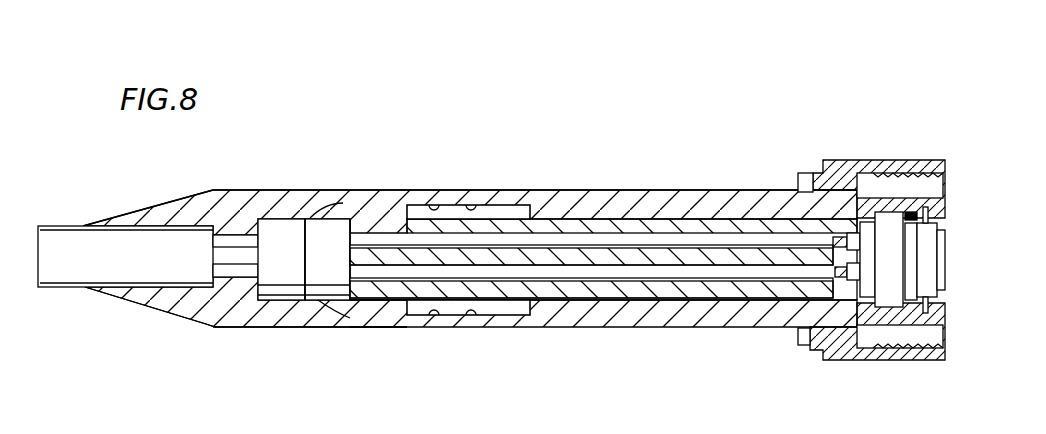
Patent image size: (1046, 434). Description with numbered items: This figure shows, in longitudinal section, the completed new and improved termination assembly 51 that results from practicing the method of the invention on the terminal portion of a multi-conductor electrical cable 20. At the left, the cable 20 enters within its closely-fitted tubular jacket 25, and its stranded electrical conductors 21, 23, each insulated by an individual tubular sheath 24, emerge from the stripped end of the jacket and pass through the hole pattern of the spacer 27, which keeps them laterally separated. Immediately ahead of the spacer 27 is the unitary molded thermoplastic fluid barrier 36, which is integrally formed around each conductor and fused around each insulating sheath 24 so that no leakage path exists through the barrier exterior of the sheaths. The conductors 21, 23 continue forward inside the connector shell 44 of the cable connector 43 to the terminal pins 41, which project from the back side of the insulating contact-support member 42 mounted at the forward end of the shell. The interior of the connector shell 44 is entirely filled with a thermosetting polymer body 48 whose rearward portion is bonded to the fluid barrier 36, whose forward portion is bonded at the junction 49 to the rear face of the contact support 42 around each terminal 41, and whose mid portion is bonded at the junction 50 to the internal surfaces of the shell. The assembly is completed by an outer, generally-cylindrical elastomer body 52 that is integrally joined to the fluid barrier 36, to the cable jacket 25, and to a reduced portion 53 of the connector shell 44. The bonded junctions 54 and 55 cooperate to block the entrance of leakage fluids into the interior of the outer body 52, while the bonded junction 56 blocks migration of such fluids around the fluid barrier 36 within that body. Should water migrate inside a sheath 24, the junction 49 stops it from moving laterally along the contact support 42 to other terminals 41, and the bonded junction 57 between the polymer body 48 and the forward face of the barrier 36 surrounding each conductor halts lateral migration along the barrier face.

The multi-conductor electrical cable 20 is at (67, 296).
The electrical conductor 21 is at (583, 279).
The electrical conductor 23 is at (720, 246).
The insulating sheath 24 is at (812, 336).
The cable jacket 25 is at (170, 263).
The spacer 27 is at (290, 263).
The fluid barrier 36 is at (341, 263).
The terminal pin 41 is at (852, 278).
The contact-support member 42 is at (890, 230).
The cable connector 43 is at (661, 186).
The connector shell 44 is at (654, 320).
The polymer body 48 is at (385, 302).
The bonded junction 49 is at (859, 222).
The bonded junction 50 is at (705, 301).
The termination assembly 51 is at (544, 185).
The outer elastomer body 52 is at (253, 318).
The reduced portion of connector shell 53 is at (498, 316).
The bonded junction 54 is at (172, 290).
The bonded junction 55 is at (437, 205).
The bonded junction 56 is at (306, 219).
The bonded junction 57 is at (356, 278).